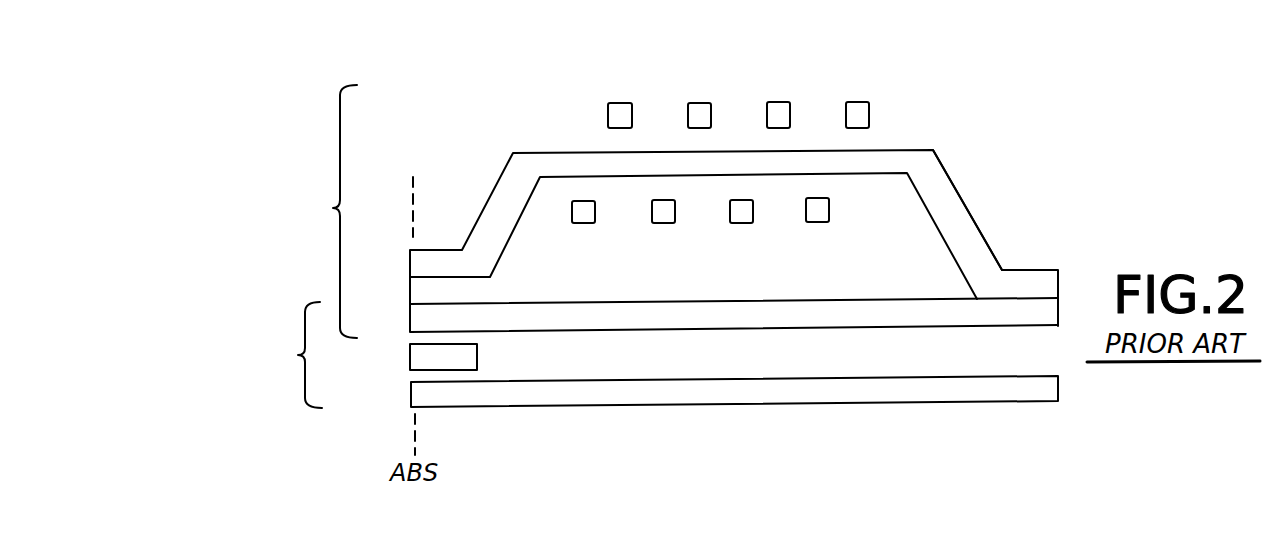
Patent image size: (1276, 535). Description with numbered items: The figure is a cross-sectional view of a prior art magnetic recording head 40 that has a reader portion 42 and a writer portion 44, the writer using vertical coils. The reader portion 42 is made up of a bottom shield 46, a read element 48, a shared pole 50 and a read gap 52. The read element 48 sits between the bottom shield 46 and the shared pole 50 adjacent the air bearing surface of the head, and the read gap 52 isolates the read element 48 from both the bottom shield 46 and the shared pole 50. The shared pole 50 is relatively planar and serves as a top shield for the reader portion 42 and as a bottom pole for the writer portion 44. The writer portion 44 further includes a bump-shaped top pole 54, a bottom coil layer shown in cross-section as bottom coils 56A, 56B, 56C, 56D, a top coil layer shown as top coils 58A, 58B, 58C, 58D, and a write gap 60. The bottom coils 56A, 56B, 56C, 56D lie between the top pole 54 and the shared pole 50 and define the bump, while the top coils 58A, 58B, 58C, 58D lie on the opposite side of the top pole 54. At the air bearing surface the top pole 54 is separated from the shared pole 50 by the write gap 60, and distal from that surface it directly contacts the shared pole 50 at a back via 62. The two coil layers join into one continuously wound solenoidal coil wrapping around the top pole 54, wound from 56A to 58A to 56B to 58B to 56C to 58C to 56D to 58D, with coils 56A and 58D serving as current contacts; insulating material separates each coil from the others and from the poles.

The magnetic recording head 40 is at (438, 122).
The reader portion 42 is at (294, 355).
The writer portion 44 is at (327, 211).
The bottom shield 46 is at (623, 390).
The read element 48 is at (420, 358).
The shared pole 50 is at (691, 313).
The read gap 52 is at (517, 351).
The top pole 54 is at (500, 208).
The bottom coil 56A is at (583, 217).
The bottom coil 56B is at (662, 217).
The bottom coil 56C is at (745, 218).
The bottom coil 56D is at (829, 211).
The top coil 58A is at (616, 112).
The top coil 58B is at (697, 112).
The top coil 58C is at (776, 112).
The top coil 58D is at (860, 113).
The write gap 60 is at (425, 292).
The back via 62 is at (957, 213).